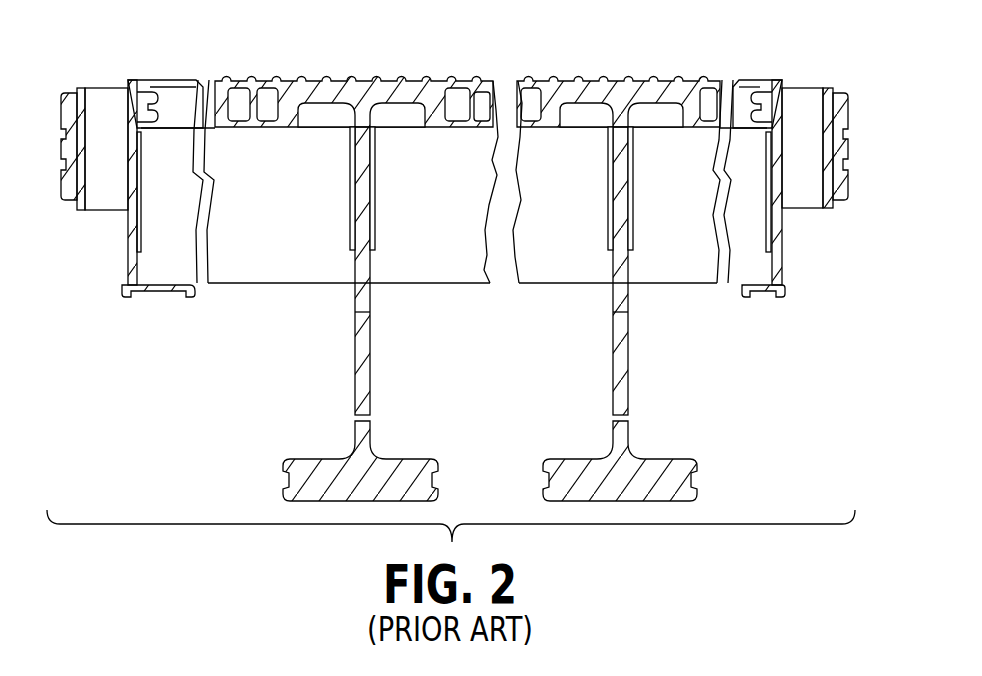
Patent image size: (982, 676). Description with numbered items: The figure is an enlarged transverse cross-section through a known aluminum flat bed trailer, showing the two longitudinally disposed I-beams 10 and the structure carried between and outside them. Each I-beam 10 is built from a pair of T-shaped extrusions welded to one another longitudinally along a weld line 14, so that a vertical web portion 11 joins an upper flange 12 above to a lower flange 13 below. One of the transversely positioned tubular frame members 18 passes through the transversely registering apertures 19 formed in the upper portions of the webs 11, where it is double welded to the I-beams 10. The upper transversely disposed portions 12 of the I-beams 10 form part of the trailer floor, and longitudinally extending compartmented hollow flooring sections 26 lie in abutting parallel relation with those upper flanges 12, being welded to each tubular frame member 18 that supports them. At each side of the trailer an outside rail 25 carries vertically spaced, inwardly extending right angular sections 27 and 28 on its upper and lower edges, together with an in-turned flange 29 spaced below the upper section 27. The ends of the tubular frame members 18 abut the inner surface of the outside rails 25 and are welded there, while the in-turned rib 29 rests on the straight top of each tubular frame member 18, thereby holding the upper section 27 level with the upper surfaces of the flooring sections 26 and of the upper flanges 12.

The I-beam 10 is at (476, 265).
The web portion 11 is at (372, 265).
The upper flange 12 is at (335, 90).
The lower flange 13 is at (412, 459).
The weld line 14 is at (370, 306).
The tubular frame member 18 is at (290, 214).
The aperture 19 is at (375, 193).
The outside rail 25 is at (132, 225).
The flooring section 26 is at (243, 81).
The upper right angular section 27 is at (173, 81).
The lower right angular section 28 is at (157, 296).
The in-turned flange 29 is at (146, 127).